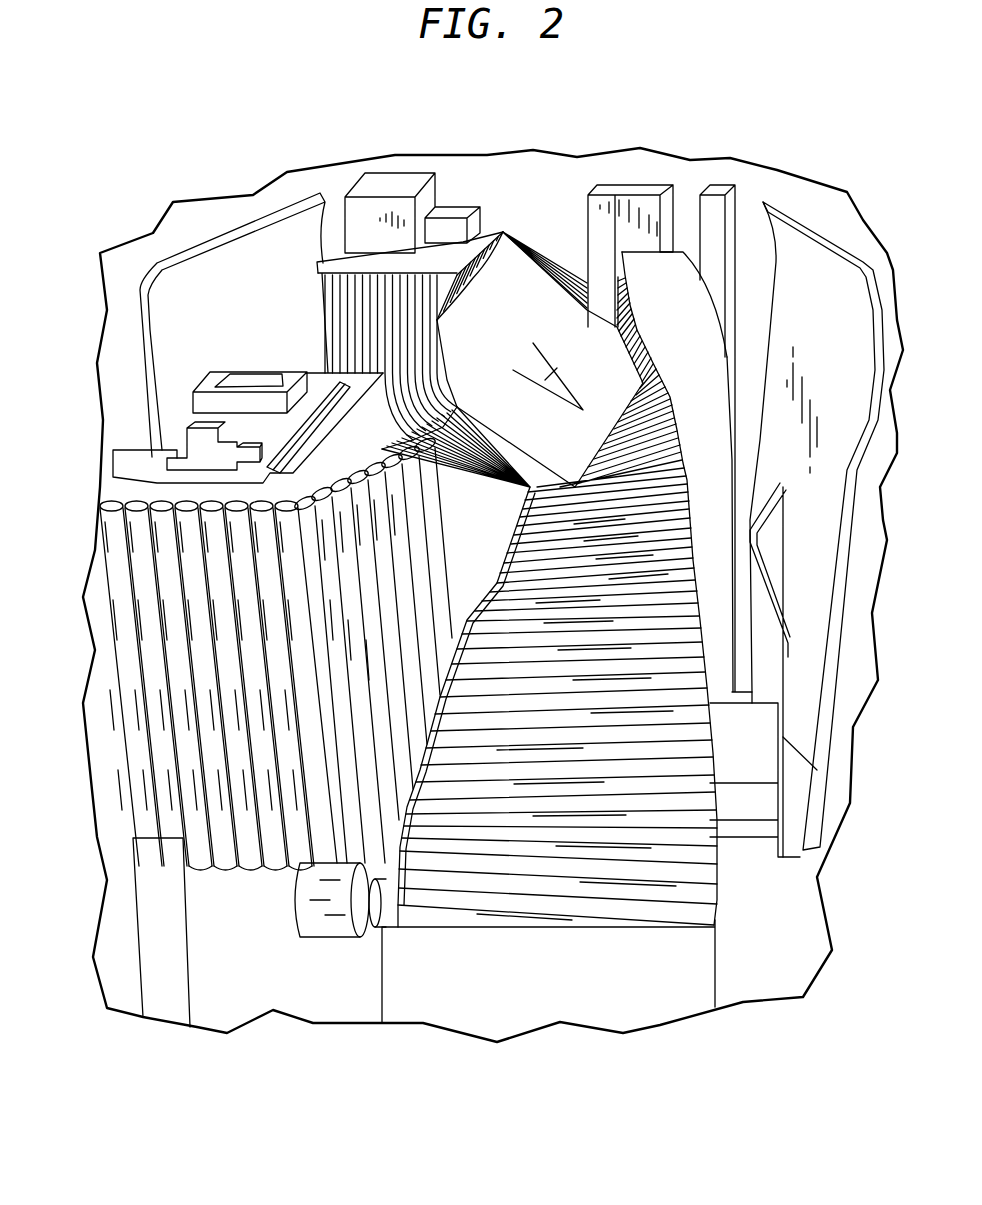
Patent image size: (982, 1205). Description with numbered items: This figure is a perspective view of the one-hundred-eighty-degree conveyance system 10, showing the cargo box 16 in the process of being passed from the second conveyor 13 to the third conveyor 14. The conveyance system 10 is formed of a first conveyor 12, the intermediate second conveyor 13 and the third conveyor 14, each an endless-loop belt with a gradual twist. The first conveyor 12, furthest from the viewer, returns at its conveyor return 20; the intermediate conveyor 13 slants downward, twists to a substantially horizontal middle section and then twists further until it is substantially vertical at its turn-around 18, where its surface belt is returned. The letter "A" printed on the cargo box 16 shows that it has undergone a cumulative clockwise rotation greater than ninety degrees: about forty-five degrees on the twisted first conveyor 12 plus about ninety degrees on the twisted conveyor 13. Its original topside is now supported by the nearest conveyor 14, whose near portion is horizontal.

The conveyance system 10 is at (798, 84).
The first conveyor 12 is at (447, 295).
The second conveyor 13 is at (530, 487).
The third conveyor 14 is at (417, 832).
The cargo box 16 is at (546, 303).
The turn-around 18 is at (147, 545).
The conveyor return 20 is at (337, 312).